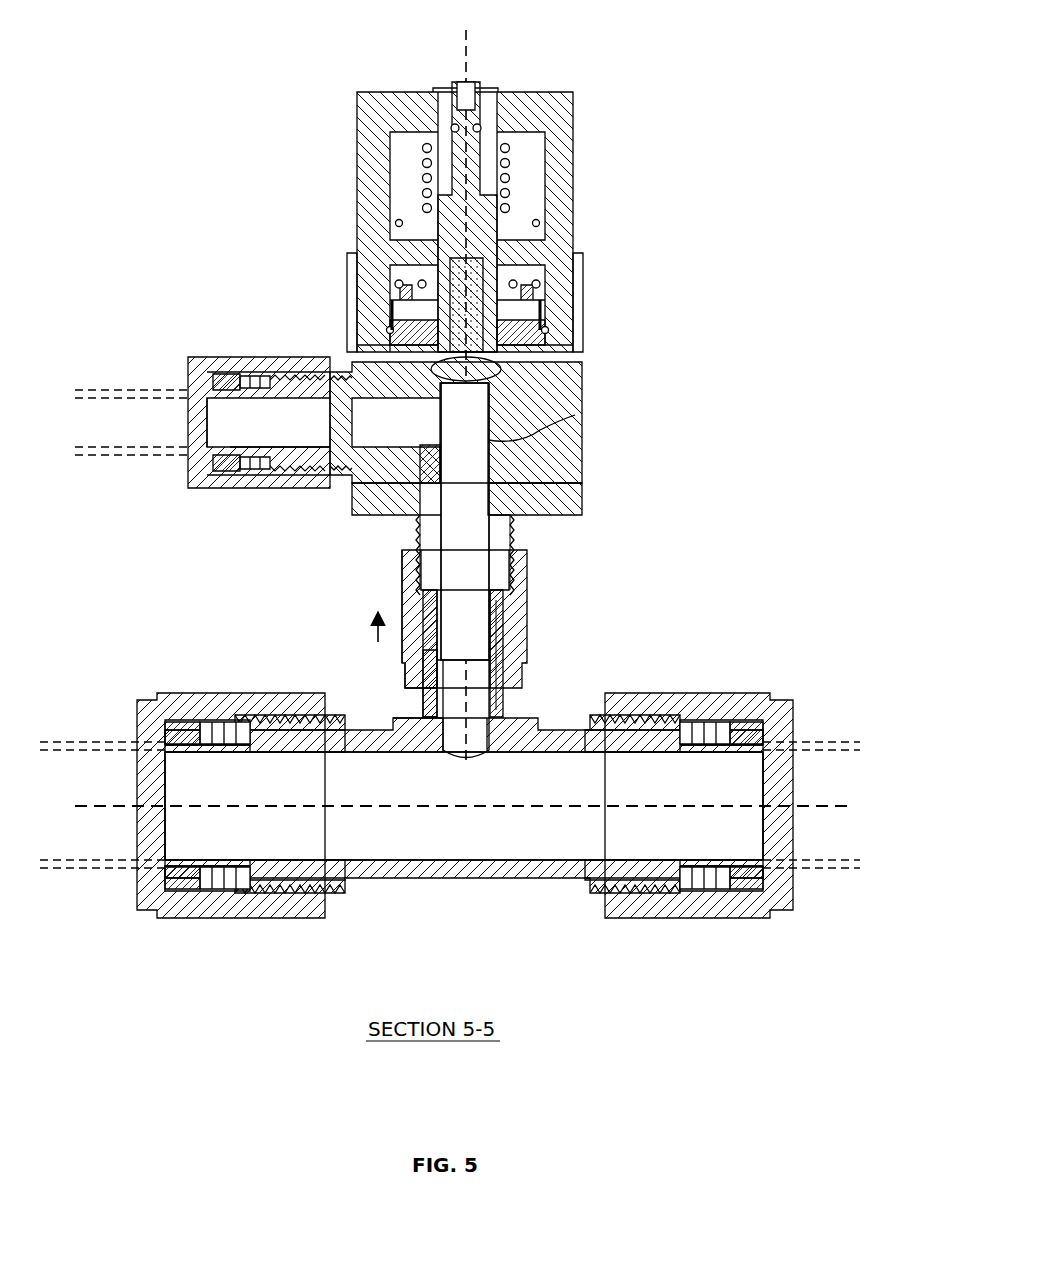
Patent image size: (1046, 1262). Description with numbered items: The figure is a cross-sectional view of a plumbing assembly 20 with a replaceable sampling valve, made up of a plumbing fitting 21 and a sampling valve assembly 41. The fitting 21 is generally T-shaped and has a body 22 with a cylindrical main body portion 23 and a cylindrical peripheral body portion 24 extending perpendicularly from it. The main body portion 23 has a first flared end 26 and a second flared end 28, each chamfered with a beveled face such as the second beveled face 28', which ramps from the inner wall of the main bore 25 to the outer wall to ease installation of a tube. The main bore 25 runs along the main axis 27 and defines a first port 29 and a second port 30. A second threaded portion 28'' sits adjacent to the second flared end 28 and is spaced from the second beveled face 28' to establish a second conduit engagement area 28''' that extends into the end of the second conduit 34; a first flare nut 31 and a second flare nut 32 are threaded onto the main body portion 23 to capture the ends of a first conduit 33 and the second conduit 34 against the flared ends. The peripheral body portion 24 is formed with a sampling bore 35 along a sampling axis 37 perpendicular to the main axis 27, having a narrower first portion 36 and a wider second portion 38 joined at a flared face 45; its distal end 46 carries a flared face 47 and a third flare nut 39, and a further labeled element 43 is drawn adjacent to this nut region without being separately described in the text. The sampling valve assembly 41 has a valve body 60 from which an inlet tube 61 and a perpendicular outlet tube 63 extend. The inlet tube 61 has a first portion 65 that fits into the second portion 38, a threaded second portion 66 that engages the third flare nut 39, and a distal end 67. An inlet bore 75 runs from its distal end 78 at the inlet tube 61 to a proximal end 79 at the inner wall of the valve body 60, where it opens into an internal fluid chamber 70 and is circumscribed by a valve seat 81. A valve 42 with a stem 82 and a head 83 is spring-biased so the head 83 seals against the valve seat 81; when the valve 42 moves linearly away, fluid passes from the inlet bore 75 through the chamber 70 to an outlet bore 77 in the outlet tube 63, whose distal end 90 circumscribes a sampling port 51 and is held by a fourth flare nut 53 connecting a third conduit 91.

The plumbing assembly 20 is at (707, 140).
The plumbing fitting 21 is at (675, 572).
The body 22 is at (582, 686).
The main body portion 23 is at (398, 882).
The peripheral body portion 24 is at (405, 630).
The main bore 25 is at (483, 862).
The first flared end 26 is at (186, 905).
The main axis 27 is at (632, 806).
The second flared end 28 is at (715, 851).
The second beveled face 28' is at (800, 772).
The second threaded portion 28'' is at (632, 855).
The second conduit engagement area 28''' is at (748, 728).
The first port 29 is at (165, 790).
The second port 30 is at (765, 843).
The first flare nut 31 is at (197, 692).
The second flare nut 32 is at (690, 692).
The first conduit 33 is at (65, 880).
The second conduit 34 is at (822, 880).
The sampling bore 35 is at (480, 708).
The first portion of sampling bore 36 is at (440, 717).
The sampling axis 37 is at (470, 45).
The second portion of sampling bore 38 is at (505, 594).
The third flare nut 39 is at (368, 578).
The sampling valve assembly 41 is at (664, 440).
The valve 42 is at (500, 378).
The nut bore 43 is at (405, 655).
The flared face 45 is at (502, 610).
The distal end of peripheral body portion 46 is at (405, 566).
The flared face 47 is at (508, 624).
The sampling port 51 is at (206, 408).
The fourth flare nut 53 is at (237, 357).
The valve body 60 is at (582, 372).
The inlet tube 61 is at (520, 536).
The outlet tube 63 is at (305, 374).
The first portion of inlet tube 65 is at (498, 644).
The threaded second portion of inlet tube 66 is at (526, 562).
The distal end of inlet tube 67 is at (410, 672).
The internal fluid chamber 70 is at (412, 372).
The inlet bore 75 is at (495, 498).
The outlet bore 77 is at (245, 449).
The distal end of inlet bore 78 is at (486, 650).
The proximal end of inlet bore 79 is at (512, 447).
The valve seat 81 is at (484, 397).
The stem 82 is at (540, 284).
The head 83 is at (548, 318).
The distal end of outlet tube 90 is at (213, 377).
The third conduit 91 is at (132, 457).